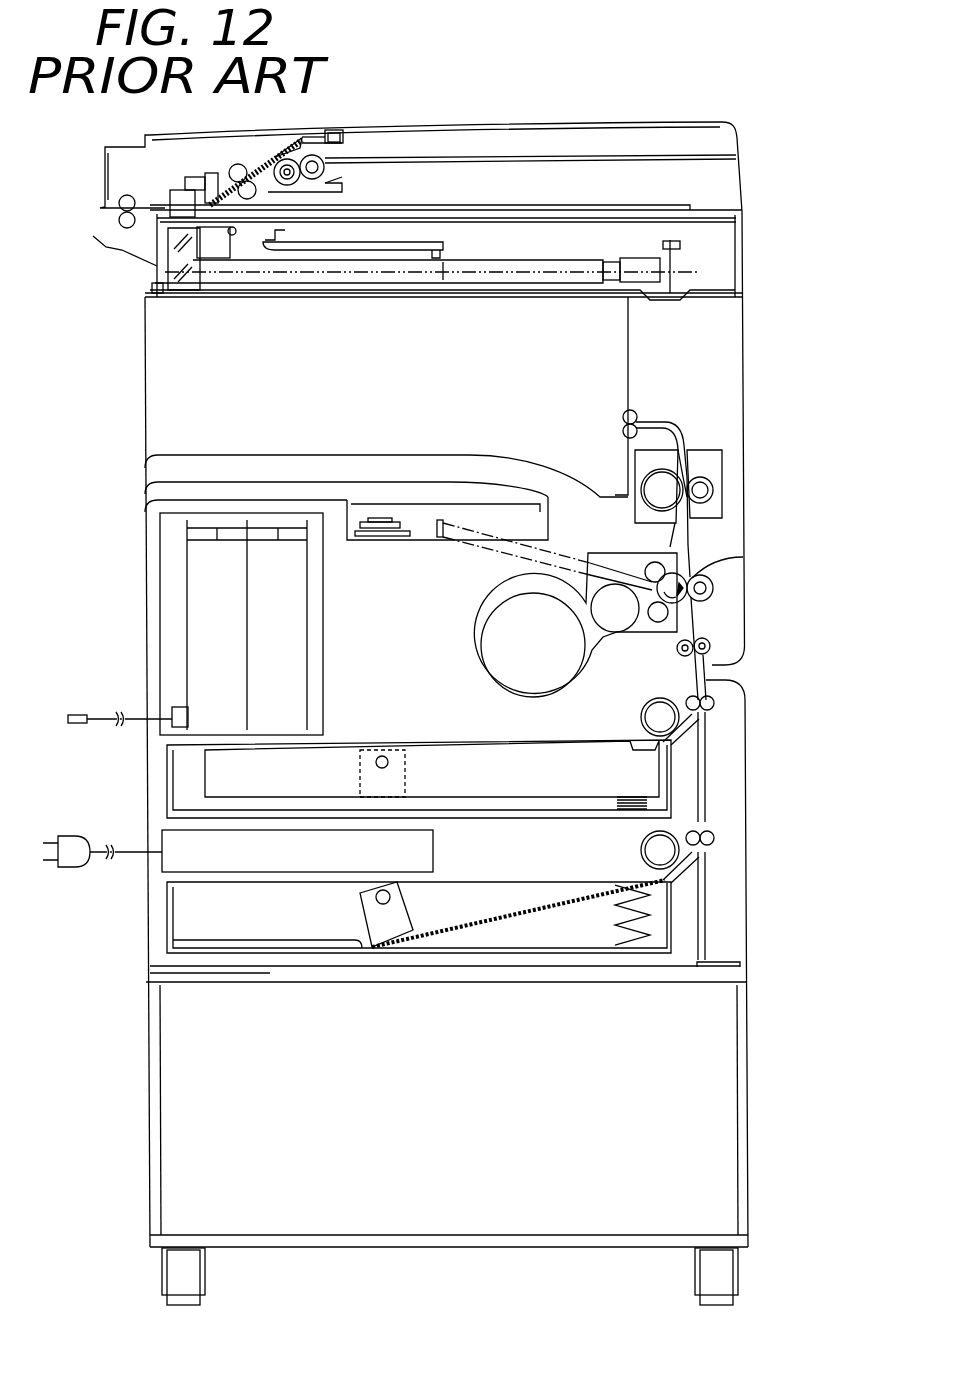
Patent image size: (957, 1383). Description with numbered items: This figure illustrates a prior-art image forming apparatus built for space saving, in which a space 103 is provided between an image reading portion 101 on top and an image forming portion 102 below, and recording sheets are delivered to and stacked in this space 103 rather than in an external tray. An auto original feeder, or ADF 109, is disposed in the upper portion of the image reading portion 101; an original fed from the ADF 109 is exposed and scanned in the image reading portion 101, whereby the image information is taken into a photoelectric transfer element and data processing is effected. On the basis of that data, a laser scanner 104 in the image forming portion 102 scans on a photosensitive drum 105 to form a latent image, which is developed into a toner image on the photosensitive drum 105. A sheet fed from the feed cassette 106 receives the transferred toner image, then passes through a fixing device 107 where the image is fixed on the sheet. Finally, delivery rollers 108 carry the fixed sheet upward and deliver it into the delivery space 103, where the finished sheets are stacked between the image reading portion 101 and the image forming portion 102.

The image reading portion 101 is at (718, 233).
The image forming portion 102 is at (358, 640).
The space 103 is at (265, 380).
The laser scanner 104 is at (357, 518).
The photosensitive drum 105 is at (670, 582).
The feed cassette 106 is at (235, 788).
The fixing device 107 is at (710, 470).
The delivery rollers 108 is at (665, 420).
The auto original feeder (ADF) 109 is at (565, 135).